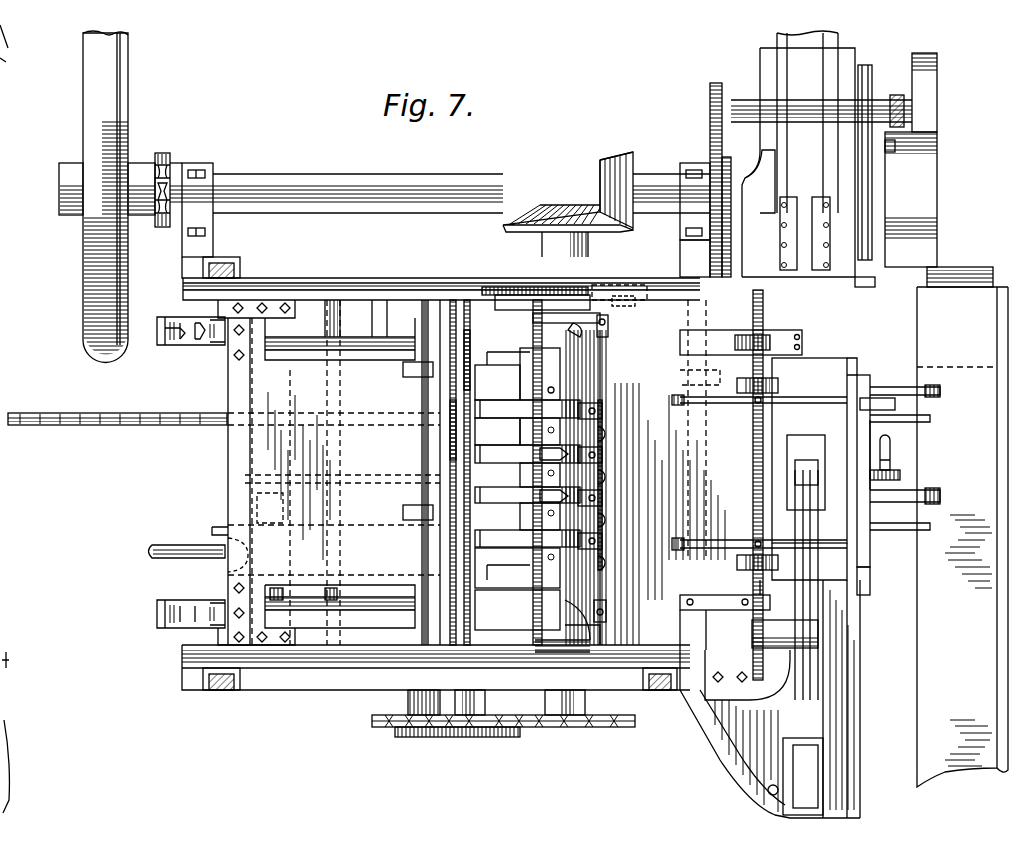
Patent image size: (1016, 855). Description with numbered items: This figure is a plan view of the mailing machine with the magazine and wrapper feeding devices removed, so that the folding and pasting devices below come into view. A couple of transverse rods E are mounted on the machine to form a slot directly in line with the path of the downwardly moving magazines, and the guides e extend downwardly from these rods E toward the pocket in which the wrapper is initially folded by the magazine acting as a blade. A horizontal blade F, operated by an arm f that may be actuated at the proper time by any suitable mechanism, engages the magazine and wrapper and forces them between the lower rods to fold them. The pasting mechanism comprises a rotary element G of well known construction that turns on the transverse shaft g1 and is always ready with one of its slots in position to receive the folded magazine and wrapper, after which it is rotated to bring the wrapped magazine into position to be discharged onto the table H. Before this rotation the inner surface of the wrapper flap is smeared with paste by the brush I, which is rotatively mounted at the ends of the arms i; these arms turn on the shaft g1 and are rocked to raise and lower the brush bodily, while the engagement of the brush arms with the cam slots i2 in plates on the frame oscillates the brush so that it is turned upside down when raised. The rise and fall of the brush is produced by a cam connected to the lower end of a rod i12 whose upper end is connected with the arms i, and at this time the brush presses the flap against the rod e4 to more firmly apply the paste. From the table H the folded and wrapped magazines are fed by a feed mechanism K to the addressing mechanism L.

The arm f is at (170, 333).
The horizontal blade F is at (263, 449).
The guides e is at (432, 370).
The rod e4 is at (466, 392).
The transverse rods E is at (454, 448).
The arms i is at (490, 360).
The brush I is at (517, 374).
The rotary element G is at (500, 410).
The shaft g1 is at (530, 432).
The rod i12 is at (578, 330).
The cam slots i2 is at (604, 455).
The feed mechanism K is at (695, 392).
The table H is at (759, 430).
The addressing mechanism L is at (812, 442).